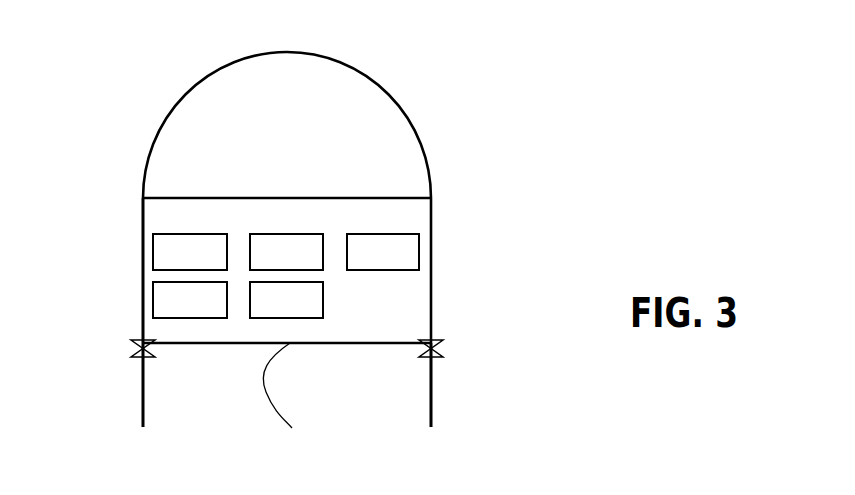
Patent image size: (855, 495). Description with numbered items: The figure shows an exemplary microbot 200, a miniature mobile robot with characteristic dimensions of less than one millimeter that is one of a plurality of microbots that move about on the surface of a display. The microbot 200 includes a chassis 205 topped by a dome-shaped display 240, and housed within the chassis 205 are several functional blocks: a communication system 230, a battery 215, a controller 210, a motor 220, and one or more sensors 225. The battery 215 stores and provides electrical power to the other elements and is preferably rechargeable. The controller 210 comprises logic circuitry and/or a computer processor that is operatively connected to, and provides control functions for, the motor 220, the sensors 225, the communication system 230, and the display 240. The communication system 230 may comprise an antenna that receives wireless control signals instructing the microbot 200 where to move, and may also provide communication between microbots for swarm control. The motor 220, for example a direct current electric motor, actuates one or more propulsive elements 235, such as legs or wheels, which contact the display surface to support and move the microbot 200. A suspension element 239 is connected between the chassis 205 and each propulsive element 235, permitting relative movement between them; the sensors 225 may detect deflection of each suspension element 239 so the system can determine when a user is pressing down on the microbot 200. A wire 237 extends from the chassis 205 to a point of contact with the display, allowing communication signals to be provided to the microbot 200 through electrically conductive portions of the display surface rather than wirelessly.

The microbot 200 is at (494, 112).
The display 240 is at (165, 124).
The chassis 205 is at (143, 232).
The communication system 230 is at (153, 249).
The battery 215 is at (153, 297).
The controller 210 is at (323, 270).
The motor 220 is at (323, 306).
The sensors 225 is at (419, 247).
The suspension element 239 is at (445, 351).
The propulsive elements 235 is at (148, 425).
The wire 237 is at (296, 425).